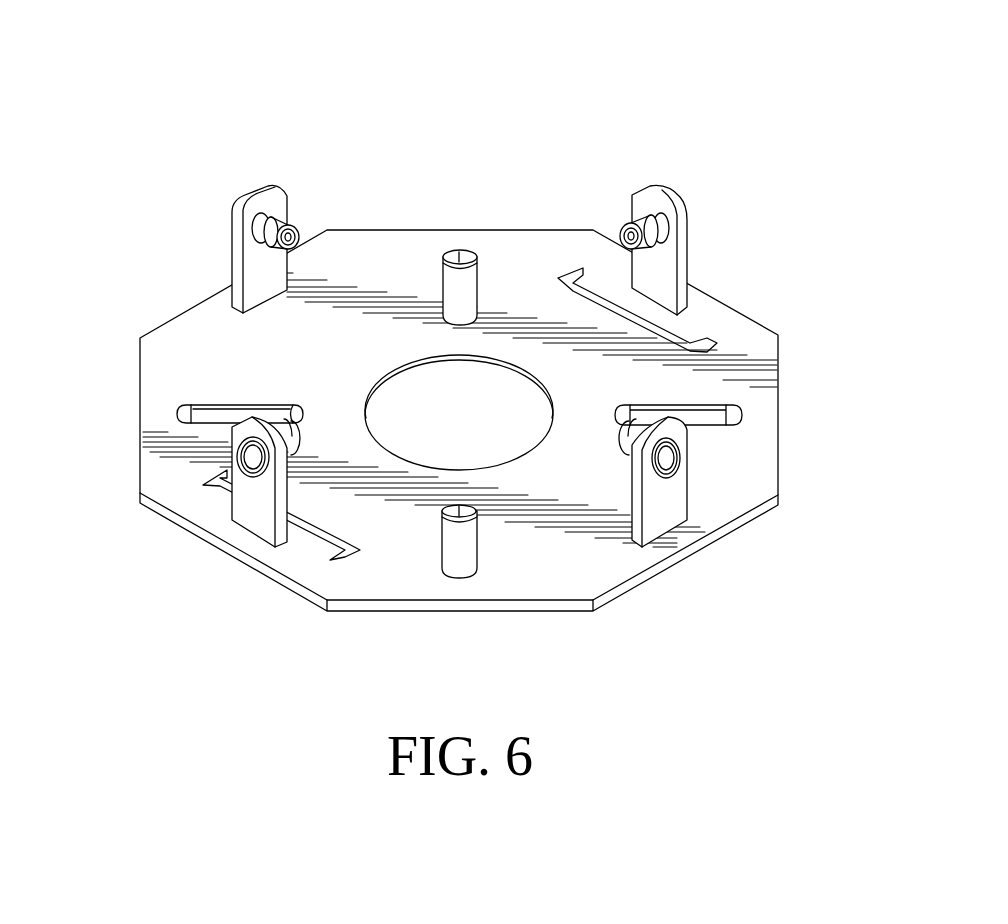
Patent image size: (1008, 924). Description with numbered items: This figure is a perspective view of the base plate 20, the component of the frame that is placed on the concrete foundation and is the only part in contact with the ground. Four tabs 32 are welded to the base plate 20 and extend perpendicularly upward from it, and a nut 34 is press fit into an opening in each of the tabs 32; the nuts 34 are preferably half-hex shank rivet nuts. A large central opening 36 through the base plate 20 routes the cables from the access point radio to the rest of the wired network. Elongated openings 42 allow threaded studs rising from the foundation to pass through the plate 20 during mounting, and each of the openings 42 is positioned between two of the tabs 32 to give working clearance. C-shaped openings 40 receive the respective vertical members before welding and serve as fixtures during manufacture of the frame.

The base plate 20 is at (213, 345).
The tabs 32 is at (682, 257).
The nuts 34 is at (275, 190).
The opening 36 is at (393, 372).
The C-shaped openings 40 is at (713, 343).
The elongated openings 42 is at (468, 257).